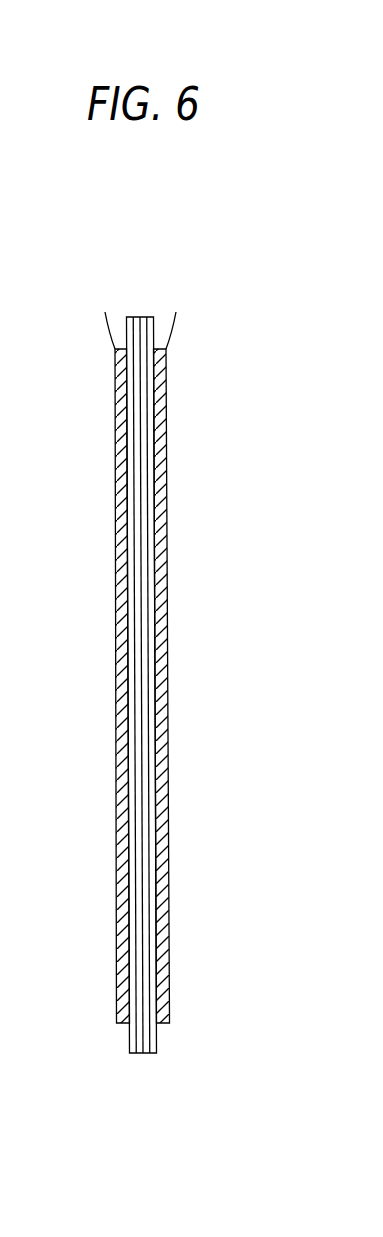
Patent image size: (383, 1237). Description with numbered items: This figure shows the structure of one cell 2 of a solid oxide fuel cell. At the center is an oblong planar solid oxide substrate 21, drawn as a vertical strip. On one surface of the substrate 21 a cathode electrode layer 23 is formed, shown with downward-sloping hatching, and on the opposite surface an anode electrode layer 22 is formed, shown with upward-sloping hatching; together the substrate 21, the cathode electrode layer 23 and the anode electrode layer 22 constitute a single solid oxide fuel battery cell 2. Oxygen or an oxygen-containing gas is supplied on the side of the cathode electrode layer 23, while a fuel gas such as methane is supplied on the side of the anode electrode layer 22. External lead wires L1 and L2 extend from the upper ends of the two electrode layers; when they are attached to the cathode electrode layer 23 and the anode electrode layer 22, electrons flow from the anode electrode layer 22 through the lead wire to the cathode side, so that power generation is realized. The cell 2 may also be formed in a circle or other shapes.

The cell 2 is at (163, 277).
The solid oxide substrate 21 is at (145, 1037).
The anode electrode layer 22 is at (115, 628).
The cathode electrode layer 23 is at (160, 627).
The external lead wire L1 is at (112, 333).
The external lead wire L2 is at (170, 334).